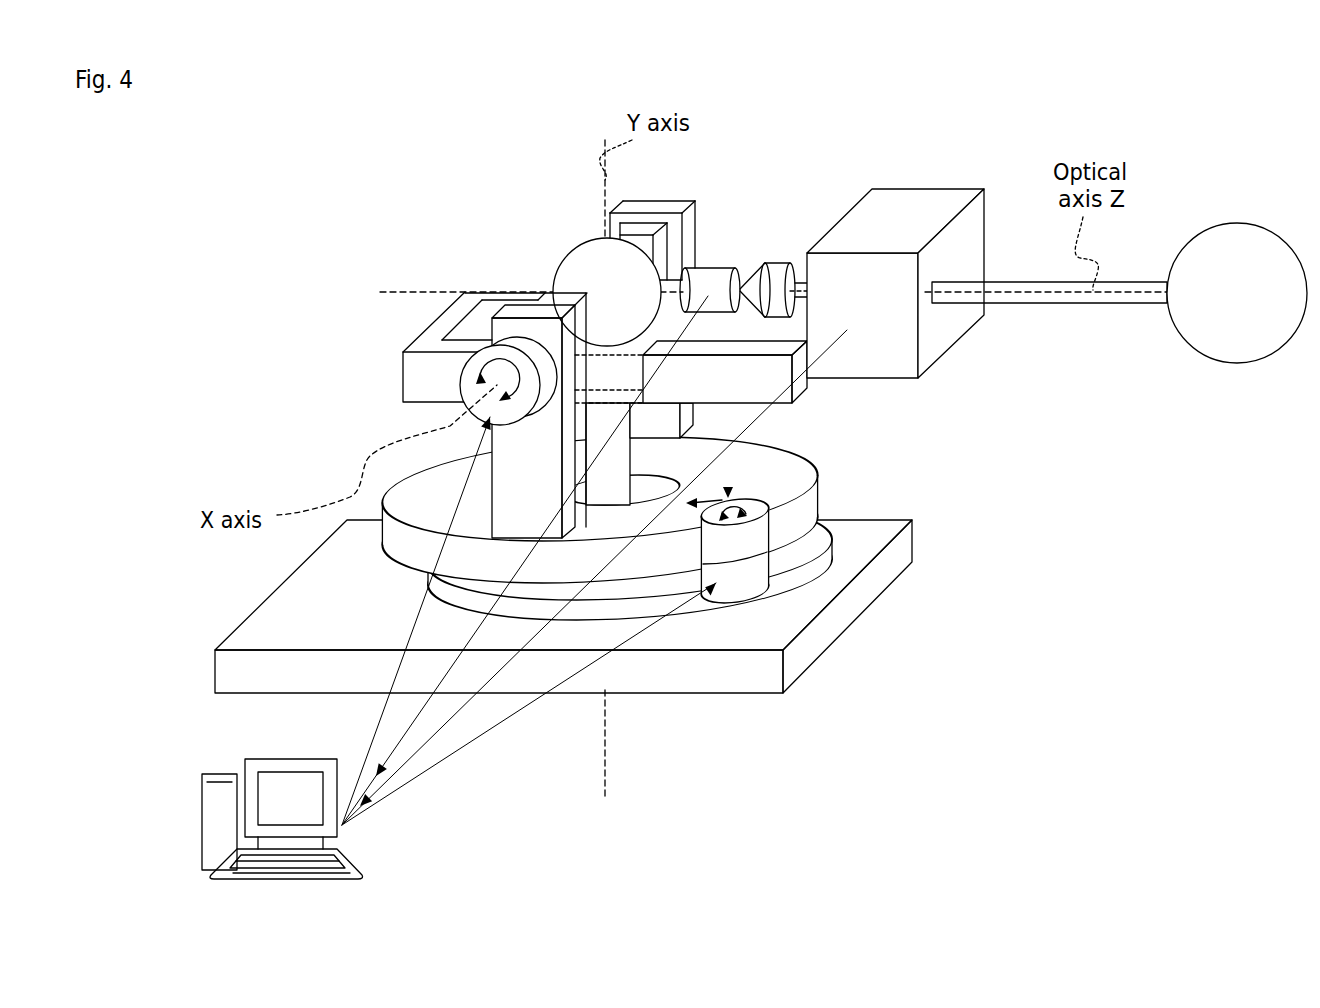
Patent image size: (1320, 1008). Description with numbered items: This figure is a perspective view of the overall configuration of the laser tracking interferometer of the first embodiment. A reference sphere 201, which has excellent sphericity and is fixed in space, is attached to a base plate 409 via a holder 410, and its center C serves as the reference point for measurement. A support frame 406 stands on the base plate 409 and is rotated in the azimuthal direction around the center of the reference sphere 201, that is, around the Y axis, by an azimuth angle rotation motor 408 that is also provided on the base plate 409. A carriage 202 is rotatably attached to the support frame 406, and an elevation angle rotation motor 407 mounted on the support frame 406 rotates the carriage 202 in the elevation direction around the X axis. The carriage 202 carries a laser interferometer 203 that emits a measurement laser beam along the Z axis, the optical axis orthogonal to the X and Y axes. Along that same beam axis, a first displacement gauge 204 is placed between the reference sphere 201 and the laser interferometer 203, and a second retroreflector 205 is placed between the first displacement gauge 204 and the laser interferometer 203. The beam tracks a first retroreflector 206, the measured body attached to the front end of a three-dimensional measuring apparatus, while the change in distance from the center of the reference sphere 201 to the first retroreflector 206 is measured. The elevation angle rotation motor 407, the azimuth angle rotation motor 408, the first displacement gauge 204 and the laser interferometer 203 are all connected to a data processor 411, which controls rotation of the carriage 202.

The reference sphere 201 is at (580, 263).
The carriage 202 is at (800, 387).
The laser interferometer 203 is at (892, 212).
The first displacement gauge 204 is at (708, 288).
The second retroreflector 205 is at (768, 282).
The first retroreflector 206 is at (1230, 265).
The support frame 406 is at (748, 487).
The elevation angle rotation motor 407 is at (462, 385).
The azimuth angle rotation motor 408 is at (753, 582).
The base plate 409 is at (712, 678).
The holder 410 is at (613, 453).
The data processor 411 is at (270, 772).